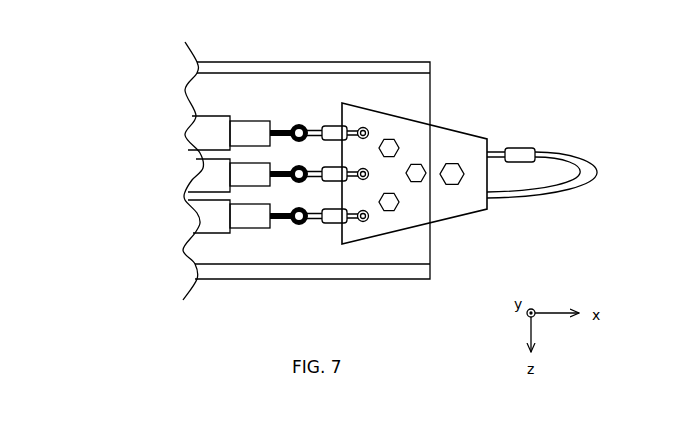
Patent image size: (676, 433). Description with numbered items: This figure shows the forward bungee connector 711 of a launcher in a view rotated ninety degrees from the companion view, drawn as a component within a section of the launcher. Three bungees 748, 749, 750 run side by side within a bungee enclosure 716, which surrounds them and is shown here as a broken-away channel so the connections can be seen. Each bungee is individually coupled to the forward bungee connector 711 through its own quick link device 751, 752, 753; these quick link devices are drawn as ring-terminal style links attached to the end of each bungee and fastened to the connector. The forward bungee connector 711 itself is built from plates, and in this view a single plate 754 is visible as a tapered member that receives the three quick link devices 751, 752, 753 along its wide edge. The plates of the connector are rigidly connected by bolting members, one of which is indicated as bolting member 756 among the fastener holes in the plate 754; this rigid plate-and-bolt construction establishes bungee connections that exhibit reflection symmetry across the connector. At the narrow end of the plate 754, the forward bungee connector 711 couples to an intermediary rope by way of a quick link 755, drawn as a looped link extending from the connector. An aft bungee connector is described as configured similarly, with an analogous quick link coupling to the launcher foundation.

The forward bungee connector 711 is at (464, 79).
The bungee enclosure 716 is at (238, 64).
The bungee 748 is at (203, 220).
The bungee 749 is at (203, 172).
The bungee 750 is at (203, 134).
The quick link device 751 is at (332, 223).
The quick link device 752 is at (332, 179).
The quick link device 753 is at (332, 138).
The plate 754 is at (420, 168).
The quick link 755 is at (598, 173).
The bolting member 756 is at (398, 204).